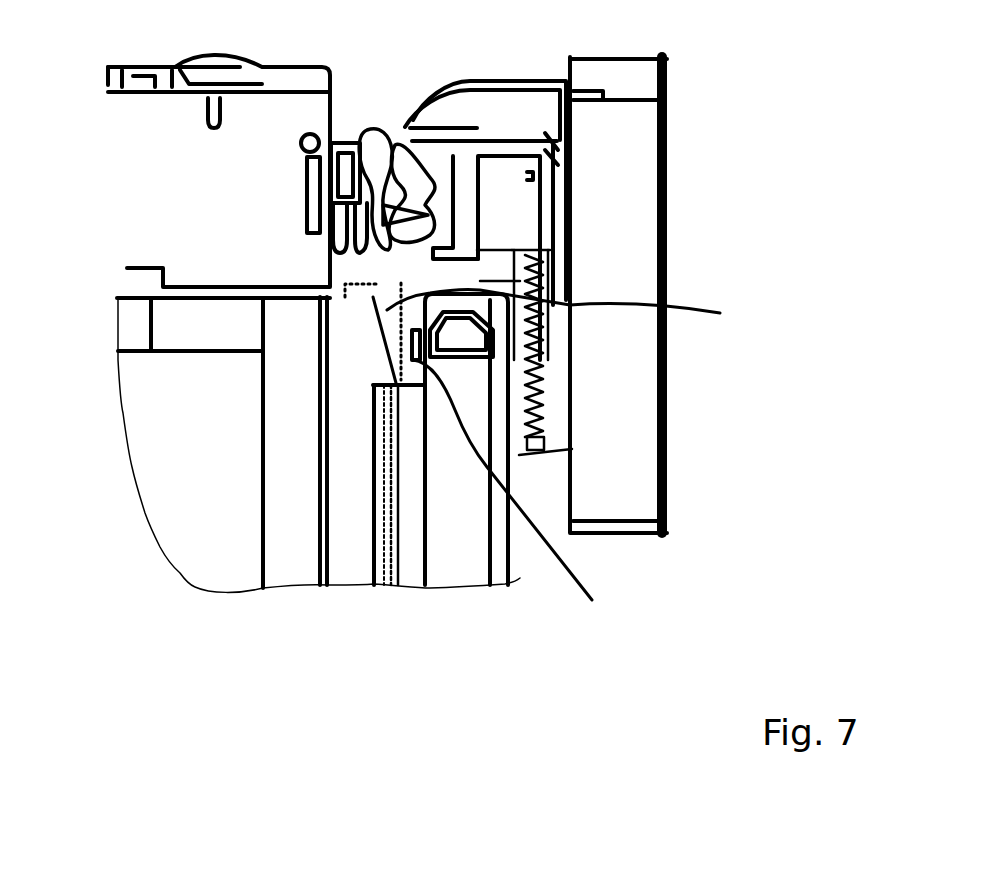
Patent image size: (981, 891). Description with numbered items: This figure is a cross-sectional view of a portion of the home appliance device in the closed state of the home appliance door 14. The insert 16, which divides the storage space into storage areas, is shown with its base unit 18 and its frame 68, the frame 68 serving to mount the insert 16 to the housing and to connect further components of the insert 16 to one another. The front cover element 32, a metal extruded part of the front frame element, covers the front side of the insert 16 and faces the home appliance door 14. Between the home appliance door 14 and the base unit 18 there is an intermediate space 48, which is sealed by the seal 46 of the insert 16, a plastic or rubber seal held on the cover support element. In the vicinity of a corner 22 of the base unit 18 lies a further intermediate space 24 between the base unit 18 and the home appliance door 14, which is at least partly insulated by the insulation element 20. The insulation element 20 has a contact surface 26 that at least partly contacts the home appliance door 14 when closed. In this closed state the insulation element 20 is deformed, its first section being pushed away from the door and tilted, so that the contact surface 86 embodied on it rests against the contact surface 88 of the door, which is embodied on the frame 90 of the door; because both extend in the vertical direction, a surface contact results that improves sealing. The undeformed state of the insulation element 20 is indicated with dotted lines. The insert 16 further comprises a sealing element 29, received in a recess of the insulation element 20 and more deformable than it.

The home appliance door 14 is at (681, 267).
The insert 16 is at (298, 590).
The base unit 18 is at (216, 474).
The insulation element 20 is at (365, 274).
The corner 22 is at (407, 268).
The further intermediate space 24 is at (403, 388).
The contact surface 26 is at (420, 286).
The sealing element 29 is at (430, 343).
The front cover element 32 is at (347, 527).
The seal 46 is at (400, 525).
The intermediate space 48 is at (400, 478).
The frame 68 is at (212, 281).
The contact surface 86 is at (576, 311).
The contact surface 88 is at (393, 150).
The frame 90 is at (519, 503).